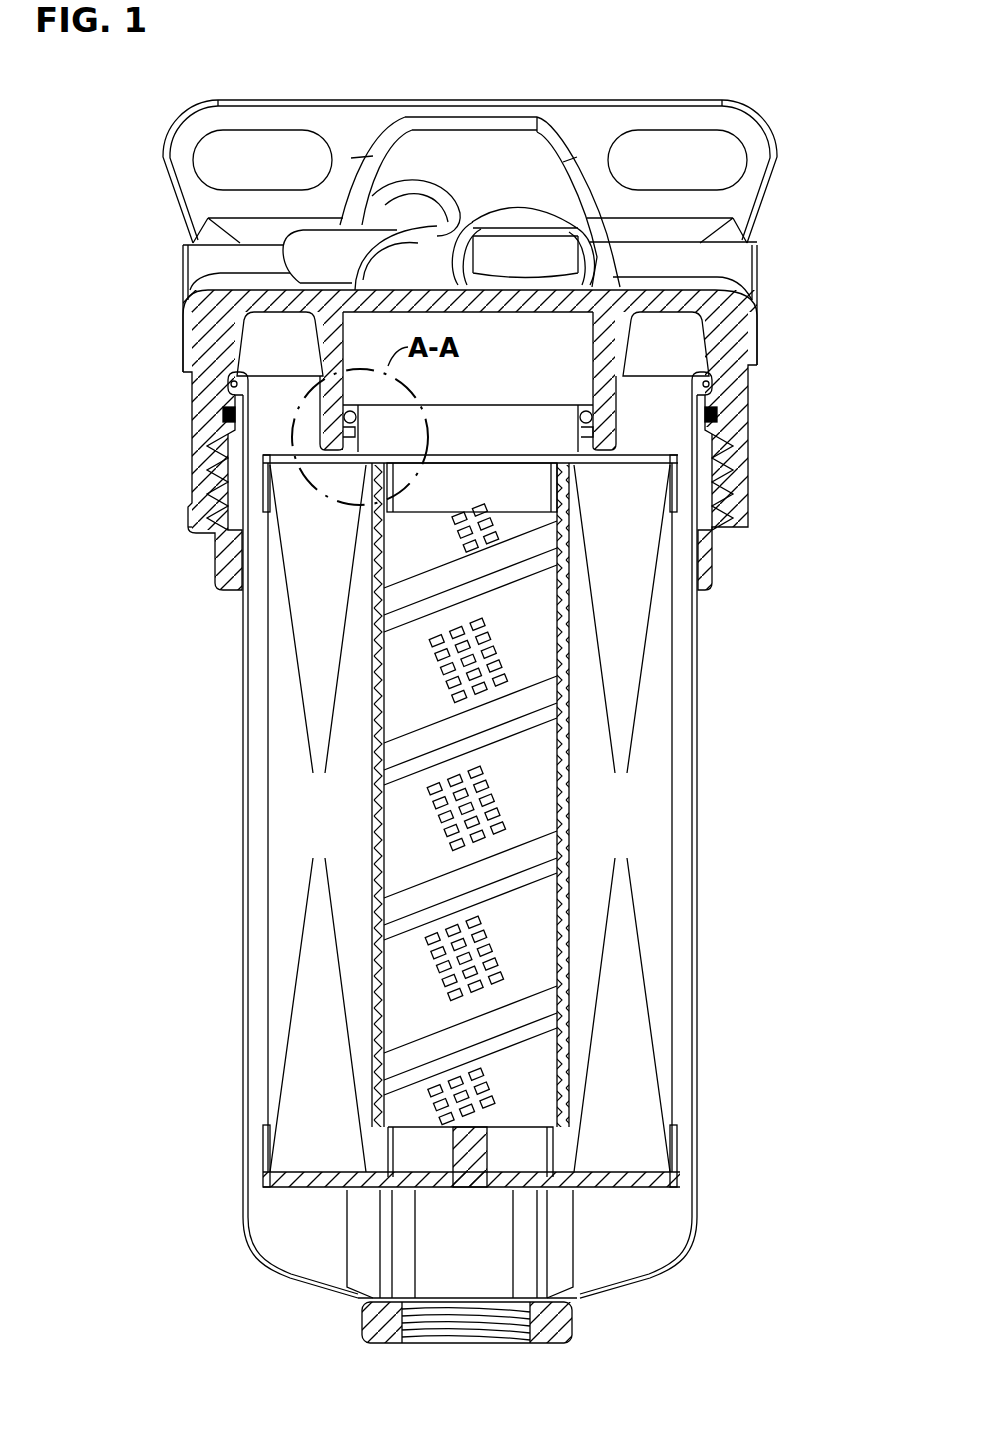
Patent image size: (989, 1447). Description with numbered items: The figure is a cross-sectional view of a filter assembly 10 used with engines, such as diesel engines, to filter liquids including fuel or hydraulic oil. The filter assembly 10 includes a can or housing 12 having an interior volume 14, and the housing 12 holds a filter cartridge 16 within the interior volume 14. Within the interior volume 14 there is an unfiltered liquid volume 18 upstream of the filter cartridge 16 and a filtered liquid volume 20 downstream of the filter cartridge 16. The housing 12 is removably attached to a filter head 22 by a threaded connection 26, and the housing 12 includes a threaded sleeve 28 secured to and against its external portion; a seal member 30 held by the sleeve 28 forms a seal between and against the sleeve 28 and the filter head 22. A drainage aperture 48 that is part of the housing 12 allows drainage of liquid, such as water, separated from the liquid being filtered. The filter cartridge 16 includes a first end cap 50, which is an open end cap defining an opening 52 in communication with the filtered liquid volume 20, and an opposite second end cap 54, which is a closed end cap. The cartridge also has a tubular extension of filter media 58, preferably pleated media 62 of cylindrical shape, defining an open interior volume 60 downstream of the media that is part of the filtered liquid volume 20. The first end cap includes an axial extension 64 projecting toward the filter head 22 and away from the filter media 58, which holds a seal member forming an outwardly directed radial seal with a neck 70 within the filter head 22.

The filter assembly 10 is at (783, 72).
The housing 12 is at (468, 875).
The interior volume 14 is at (255, 1034).
The filter cartridge 16 is at (523, 797).
The unfiltered liquid volume 18 is at (692, 854).
The filtered liquid volume 20 is at (560, 802).
The filter head 22 is at (186, 398).
The threaded connection 26 is at (735, 470).
The threaded sleeve 28 is at (222, 518).
The seal member 30 is at (718, 414).
The drainage aperture 48 is at (528, 1342).
The first end cap 50 is at (645, 457).
The opening 52 is at (497, 455).
The second end cap 54 is at (282, 1188).
The filter media 58 is at (295, 778).
The open interior volume 60 is at (555, 598).
The pleated media 62 is at (658, 1032).
The axial extension 64 is at (585, 425).
The neck 70 is at (320, 360).